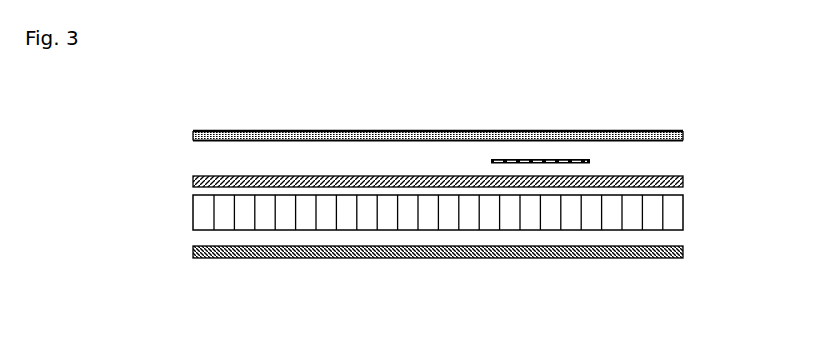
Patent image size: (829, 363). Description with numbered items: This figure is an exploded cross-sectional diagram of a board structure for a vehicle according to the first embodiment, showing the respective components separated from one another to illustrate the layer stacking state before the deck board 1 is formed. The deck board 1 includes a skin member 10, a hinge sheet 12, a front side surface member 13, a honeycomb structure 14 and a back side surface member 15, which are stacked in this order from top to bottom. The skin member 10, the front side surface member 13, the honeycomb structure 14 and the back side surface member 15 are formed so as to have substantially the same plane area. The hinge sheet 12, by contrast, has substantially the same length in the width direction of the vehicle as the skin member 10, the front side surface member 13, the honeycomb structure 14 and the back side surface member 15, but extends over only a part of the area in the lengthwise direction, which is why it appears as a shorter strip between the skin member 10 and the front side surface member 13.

The deck board 1 is at (529, 286).
The skin member 10 is at (295, 130).
The hinge sheet 12 is at (553, 159).
The front side surface member 13 is at (667, 177).
The honeycomb structure 14 is at (684, 213).
The back side surface member 15 is at (647, 258).